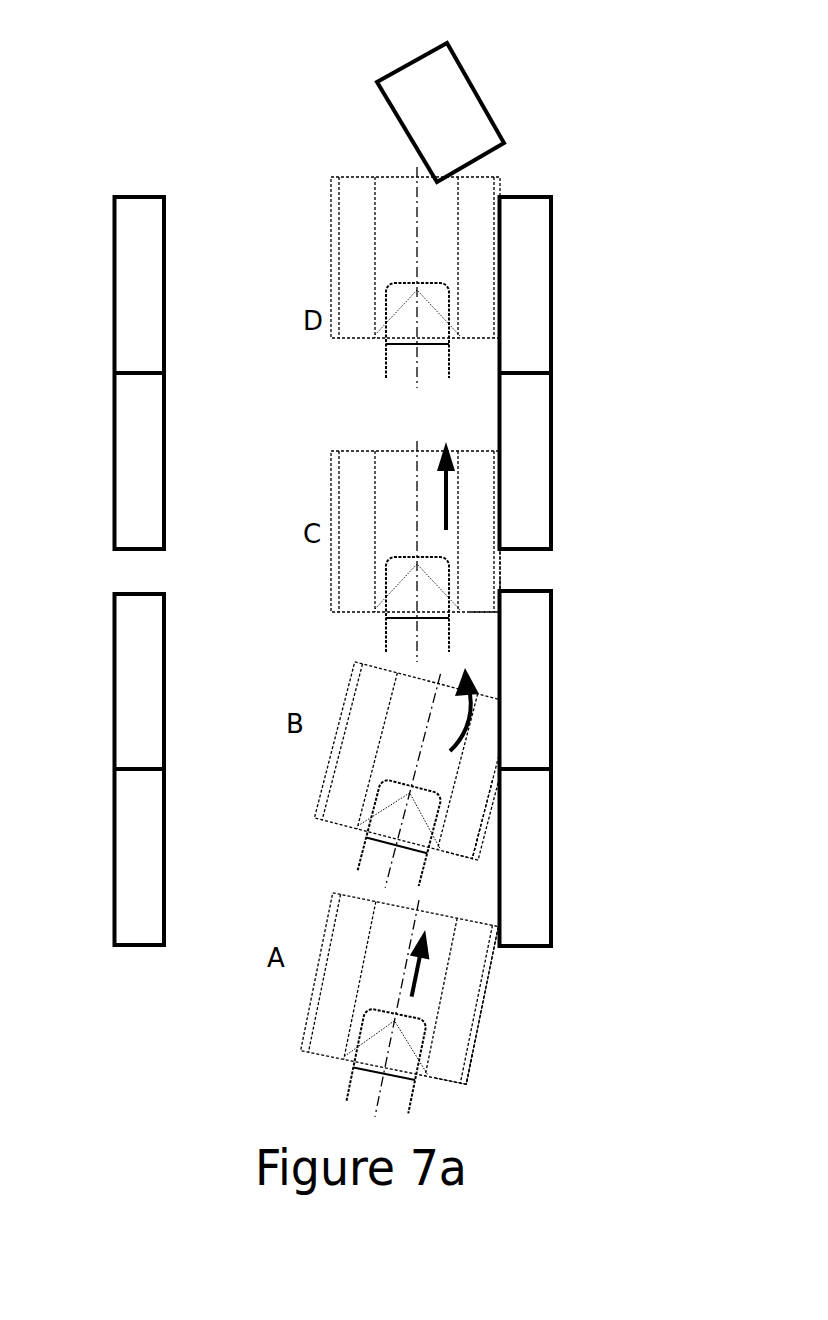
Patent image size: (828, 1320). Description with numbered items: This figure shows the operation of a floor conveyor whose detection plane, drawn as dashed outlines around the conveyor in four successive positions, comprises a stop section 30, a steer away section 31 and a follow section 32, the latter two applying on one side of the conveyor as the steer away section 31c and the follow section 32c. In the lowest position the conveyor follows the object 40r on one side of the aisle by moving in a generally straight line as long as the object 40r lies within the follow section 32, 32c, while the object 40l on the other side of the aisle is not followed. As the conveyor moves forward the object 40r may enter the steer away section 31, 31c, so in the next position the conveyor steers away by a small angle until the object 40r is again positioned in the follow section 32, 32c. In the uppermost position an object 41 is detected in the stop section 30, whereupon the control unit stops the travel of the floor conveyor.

The stop section 30 is at (415, 277).
The steer away section 31 is at (472, 826).
The steer away section 31c is at (477, 803).
The follow section 32 is at (497, 567).
The follow section 32c is at (500, 582).
The object 40l is at (166, 323).
The object 40r is at (553, 322).
The object 41 is at (390, 107).